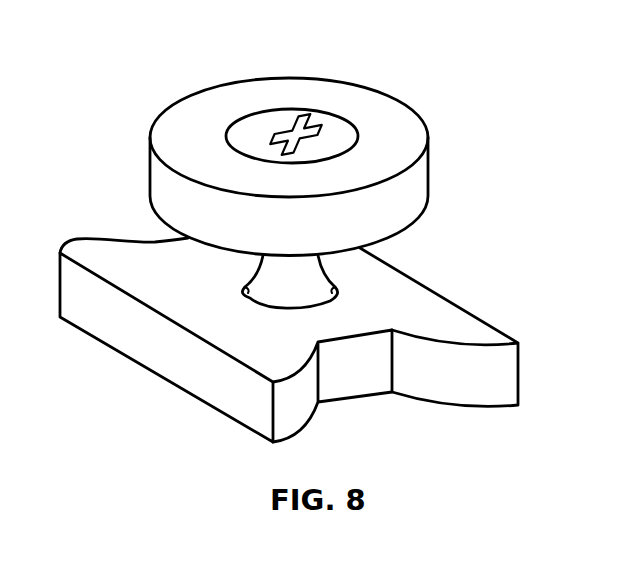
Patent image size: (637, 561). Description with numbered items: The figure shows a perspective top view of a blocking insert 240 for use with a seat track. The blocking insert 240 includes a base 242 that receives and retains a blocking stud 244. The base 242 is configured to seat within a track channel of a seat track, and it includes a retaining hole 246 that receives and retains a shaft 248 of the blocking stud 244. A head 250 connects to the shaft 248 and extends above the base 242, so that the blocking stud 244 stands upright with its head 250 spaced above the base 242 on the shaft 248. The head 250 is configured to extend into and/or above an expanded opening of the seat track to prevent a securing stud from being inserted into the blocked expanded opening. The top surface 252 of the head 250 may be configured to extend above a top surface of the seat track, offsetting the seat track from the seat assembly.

The blocking insert 240 is at (151, 77).
The base 242 is at (192, 367).
The blocking stud 244 is at (468, 160).
The retaining hole 246 is at (332, 307).
The shaft 248 is at (320, 270).
The head 250 is at (343, 82).
The top surface 252 is at (408, 124).